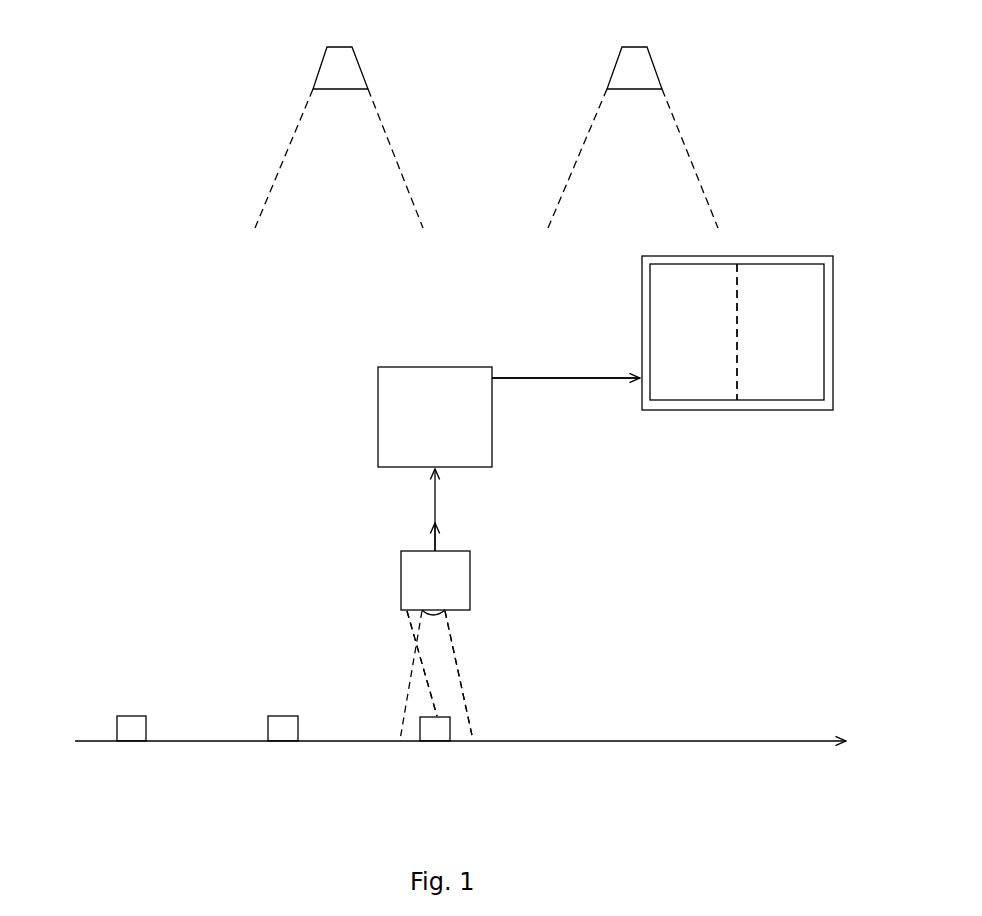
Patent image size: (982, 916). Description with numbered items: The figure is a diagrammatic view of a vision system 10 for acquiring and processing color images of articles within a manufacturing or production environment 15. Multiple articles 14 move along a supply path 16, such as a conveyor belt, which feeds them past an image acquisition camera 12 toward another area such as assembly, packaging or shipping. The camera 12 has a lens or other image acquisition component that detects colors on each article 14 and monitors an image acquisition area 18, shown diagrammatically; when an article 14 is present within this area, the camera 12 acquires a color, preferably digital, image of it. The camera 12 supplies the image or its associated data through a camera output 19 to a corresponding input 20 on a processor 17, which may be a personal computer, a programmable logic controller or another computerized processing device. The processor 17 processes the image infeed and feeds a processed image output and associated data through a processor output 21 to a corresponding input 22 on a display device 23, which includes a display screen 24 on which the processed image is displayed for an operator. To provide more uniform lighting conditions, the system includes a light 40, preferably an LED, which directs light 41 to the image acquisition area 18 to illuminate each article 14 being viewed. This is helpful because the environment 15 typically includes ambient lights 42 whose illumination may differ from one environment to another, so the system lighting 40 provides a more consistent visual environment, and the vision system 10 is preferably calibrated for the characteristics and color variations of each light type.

The vision system 10 is at (250, 348).
The image acquisition camera 12 is at (460, 580).
The article 14 is at (133, 722).
The manufacturing or production environment 15 is at (147, 481).
The supply path 16 is at (768, 743).
The processor 17 is at (388, 405).
The image acquisition area 18 is at (460, 672).
The camera output 19 is at (439, 513).
The input 20 is at (439, 470).
The processor output 21 is at (492, 378).
The input 22 is at (640, 384).
The display device 23 is at (743, 407).
The display screen 24 is at (767, 278).
The light 40 is at (405, 611).
The light 41 is at (422, 657).
The ambient lights 42 is at (333, 76).